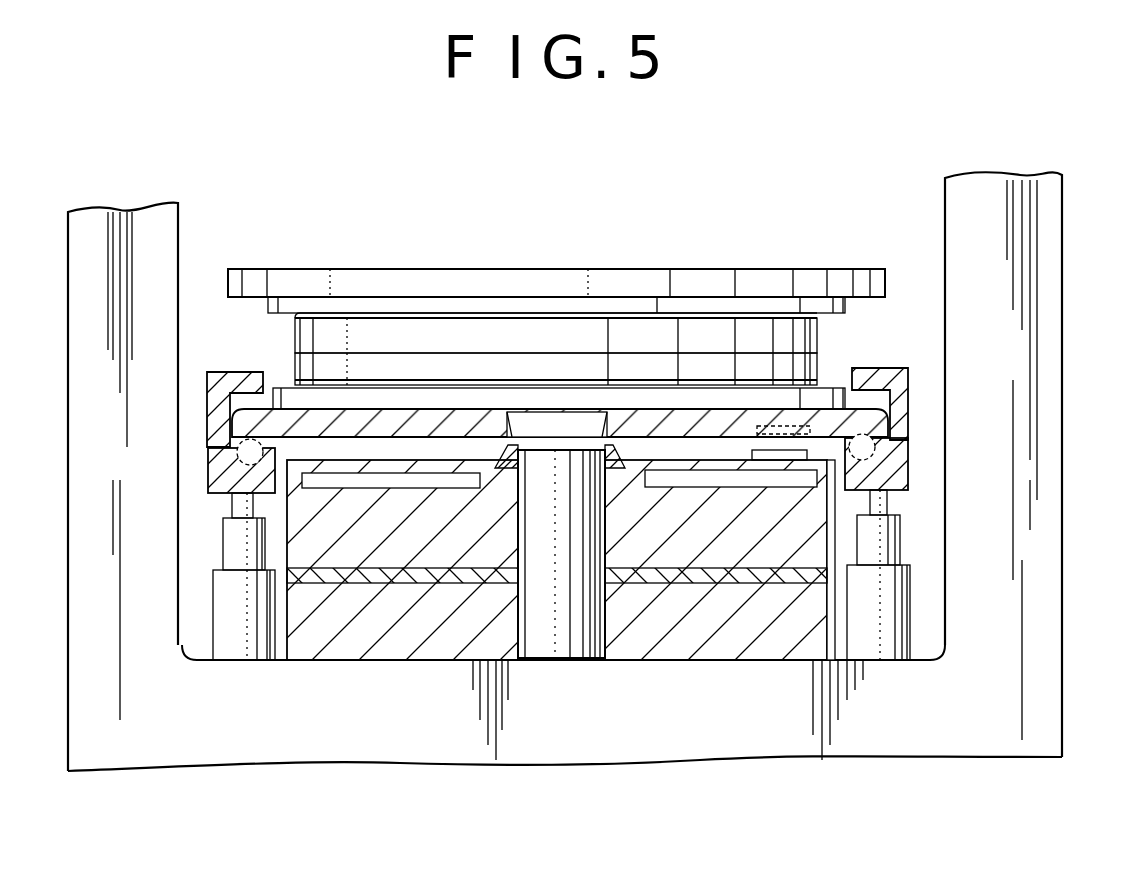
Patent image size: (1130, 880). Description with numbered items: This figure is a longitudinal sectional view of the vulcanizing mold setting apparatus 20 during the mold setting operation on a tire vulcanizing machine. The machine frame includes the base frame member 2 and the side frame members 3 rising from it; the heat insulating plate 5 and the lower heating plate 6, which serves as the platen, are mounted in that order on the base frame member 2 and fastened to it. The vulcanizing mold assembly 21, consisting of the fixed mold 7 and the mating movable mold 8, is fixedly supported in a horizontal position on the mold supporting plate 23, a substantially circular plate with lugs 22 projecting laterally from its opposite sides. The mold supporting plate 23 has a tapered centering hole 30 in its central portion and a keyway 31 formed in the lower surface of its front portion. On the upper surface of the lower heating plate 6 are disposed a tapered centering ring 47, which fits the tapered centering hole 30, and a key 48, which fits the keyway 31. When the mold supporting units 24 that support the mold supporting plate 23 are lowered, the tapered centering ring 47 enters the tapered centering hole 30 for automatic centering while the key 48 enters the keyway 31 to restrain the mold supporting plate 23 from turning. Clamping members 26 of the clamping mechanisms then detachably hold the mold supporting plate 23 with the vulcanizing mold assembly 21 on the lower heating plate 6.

The base frame member 2 is at (562, 742).
The side frame members 3 is at (78, 353).
The heat insulating plate 5 is at (722, 592).
The lower heating plate 6 is at (398, 592).
The fixed mold 7 is at (378, 368).
The movable mold 8 is at (455, 338).
The vulcanizing mold setting apparatus 20 is at (565, 481).
The vulcanizing mold assembly 21 is at (639, 268).
The lugs 22 is at (613, 430).
The mold supporting plate 23 is at (458, 425).
The mold supporting units 24 is at (213, 484).
The clamping members 26 is at (230, 372).
The tapered centering hole 30 is at (512, 428).
The keyway 31 is at (800, 426).
The tapered centering ring 47 is at (617, 468).
The key 48 is at (778, 462).